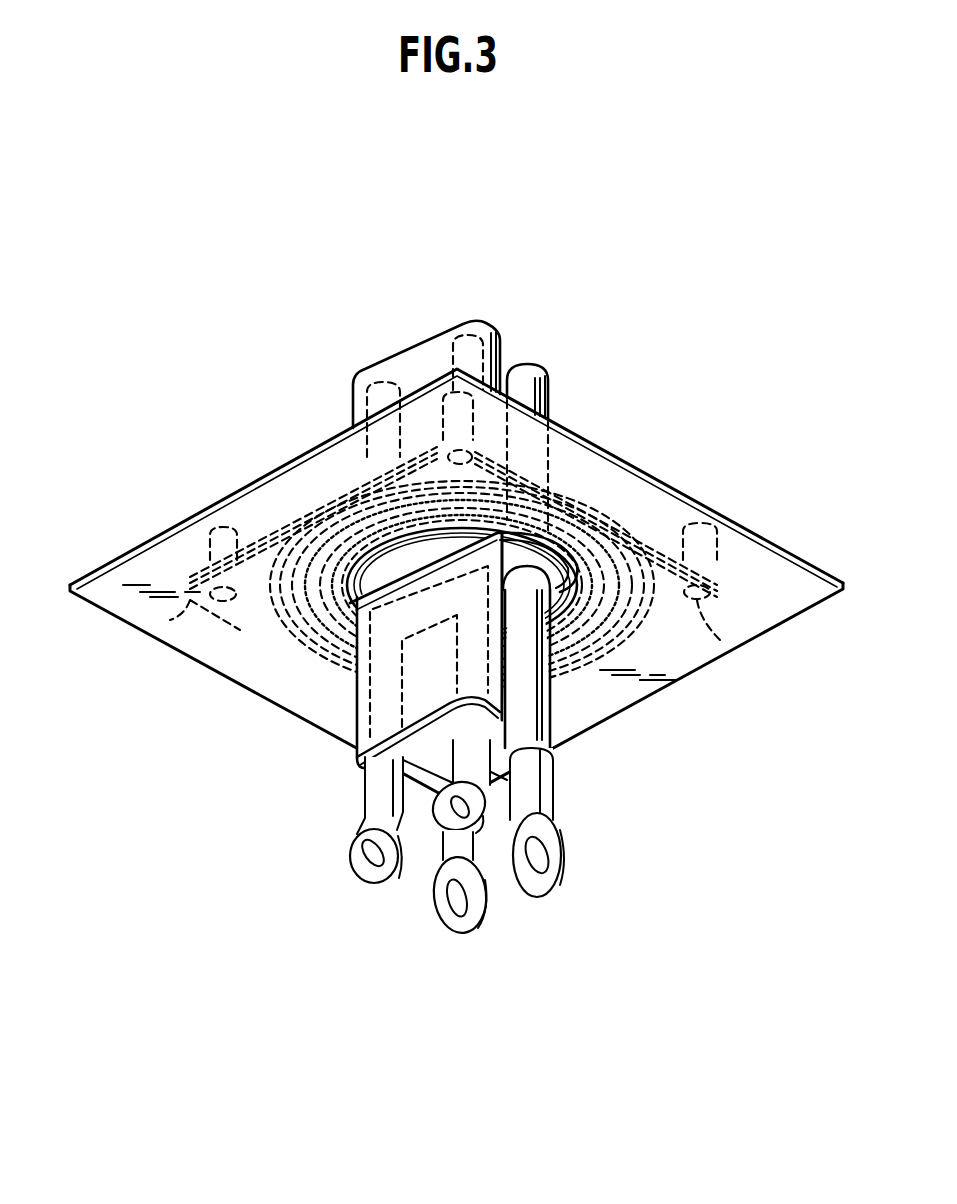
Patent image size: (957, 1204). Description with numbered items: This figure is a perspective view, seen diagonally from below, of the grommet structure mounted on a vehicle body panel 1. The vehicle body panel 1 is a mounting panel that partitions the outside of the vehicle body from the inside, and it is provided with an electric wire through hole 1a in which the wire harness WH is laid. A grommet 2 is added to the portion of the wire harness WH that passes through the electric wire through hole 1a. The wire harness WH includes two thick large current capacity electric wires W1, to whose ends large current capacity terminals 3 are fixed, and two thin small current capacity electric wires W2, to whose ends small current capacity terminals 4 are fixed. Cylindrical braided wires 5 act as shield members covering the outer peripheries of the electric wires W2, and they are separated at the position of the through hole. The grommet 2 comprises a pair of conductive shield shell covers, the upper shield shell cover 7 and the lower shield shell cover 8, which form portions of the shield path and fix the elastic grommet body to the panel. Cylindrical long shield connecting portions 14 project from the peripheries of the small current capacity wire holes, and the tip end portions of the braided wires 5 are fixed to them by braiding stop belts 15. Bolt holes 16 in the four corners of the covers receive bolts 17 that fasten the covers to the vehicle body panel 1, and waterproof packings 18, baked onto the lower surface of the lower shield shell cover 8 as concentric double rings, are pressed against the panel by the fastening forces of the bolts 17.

The vehicle body panel 1 is at (778, 593).
The electric wire through hole 1a is at (396, 546).
The grommet 2 is at (271, 500).
The large current capacity terminals 3 is at (541, 897).
The small current capacity terminals 4 is at (455, 913).
The braided wires 5 is at (413, 363).
The upper shield shell cover 7 is at (630, 533).
The lower shield shell cover 8 is at (717, 583).
The shield connecting portions 14 is at (348, 587).
The braiding stop belts 15 is at (343, 590).
The bolt holes 16 is at (203, 613).
The bolts 17 is at (210, 543).
The waterproof packings 18 is at (573, 540).
The large current capacity electric wires W1 is at (523, 378).
The small current capacity electric wires W2 is at (470, 347).
The wire harness WH is at (513, 322).